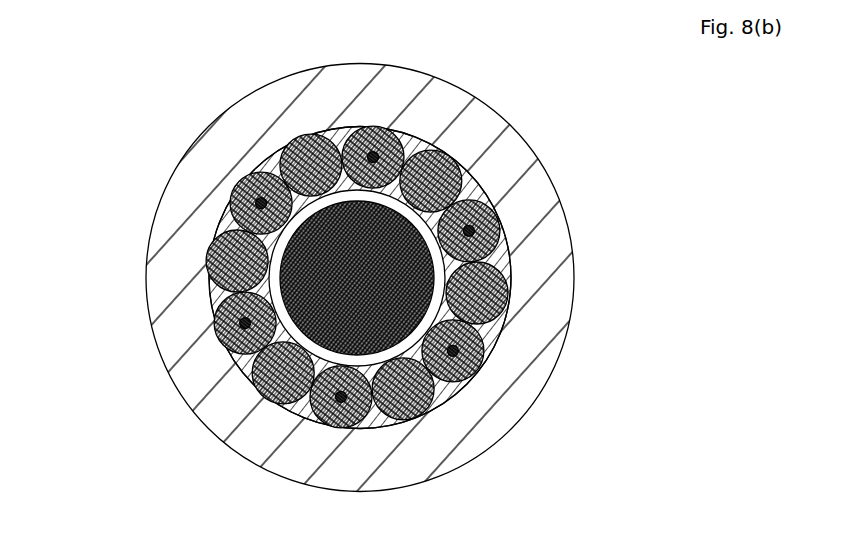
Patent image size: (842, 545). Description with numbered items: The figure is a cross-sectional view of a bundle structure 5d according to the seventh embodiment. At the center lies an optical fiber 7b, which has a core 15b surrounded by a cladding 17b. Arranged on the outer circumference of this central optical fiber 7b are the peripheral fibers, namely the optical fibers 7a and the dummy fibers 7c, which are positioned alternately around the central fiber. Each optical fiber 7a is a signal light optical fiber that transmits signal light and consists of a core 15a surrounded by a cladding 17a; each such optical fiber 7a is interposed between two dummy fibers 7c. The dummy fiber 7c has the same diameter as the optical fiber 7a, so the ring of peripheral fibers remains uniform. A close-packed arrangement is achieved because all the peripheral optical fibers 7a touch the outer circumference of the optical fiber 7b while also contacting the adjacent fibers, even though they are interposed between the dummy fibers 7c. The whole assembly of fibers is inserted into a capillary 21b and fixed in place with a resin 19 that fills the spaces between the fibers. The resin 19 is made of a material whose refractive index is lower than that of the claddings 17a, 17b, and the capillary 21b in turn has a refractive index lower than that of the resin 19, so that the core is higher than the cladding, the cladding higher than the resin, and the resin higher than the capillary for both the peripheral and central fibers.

The bundle structure 5d is at (222, 313).
The optical fiber 7a is at (223, 318).
The optical fiber 7b is at (503, 222).
The dummy fiber 7c is at (268, 383).
The core 15a is at (474, 232).
The core 15b is at (457, 357).
The cladding 17a is at (503, 250).
The cladding 17b is at (442, 385).
The resin 19 is at (225, 228).
The capillary 21b is at (527, 178).